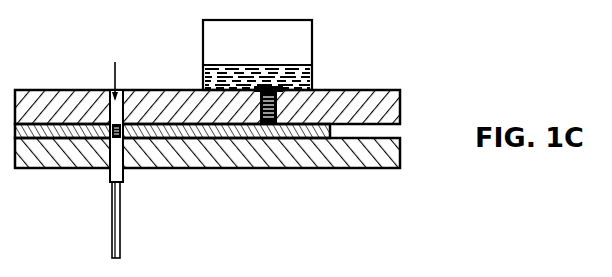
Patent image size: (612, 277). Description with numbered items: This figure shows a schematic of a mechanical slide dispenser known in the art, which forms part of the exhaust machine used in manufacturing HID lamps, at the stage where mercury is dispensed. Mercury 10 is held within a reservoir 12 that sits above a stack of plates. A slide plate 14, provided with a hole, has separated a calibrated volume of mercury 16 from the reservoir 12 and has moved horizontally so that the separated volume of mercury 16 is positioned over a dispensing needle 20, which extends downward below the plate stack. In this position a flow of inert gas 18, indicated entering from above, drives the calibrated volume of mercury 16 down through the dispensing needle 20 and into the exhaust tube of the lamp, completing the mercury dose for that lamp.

The mercury 10 is at (312, 70).
The reservoir 12 is at (203, 43).
The slide plate 14 is at (316, 130).
The calibrated volume of mercury 16 is at (135, 140).
The flow of inert gas 18 is at (115, 78).
The dispensing needle 20 is at (121, 250).